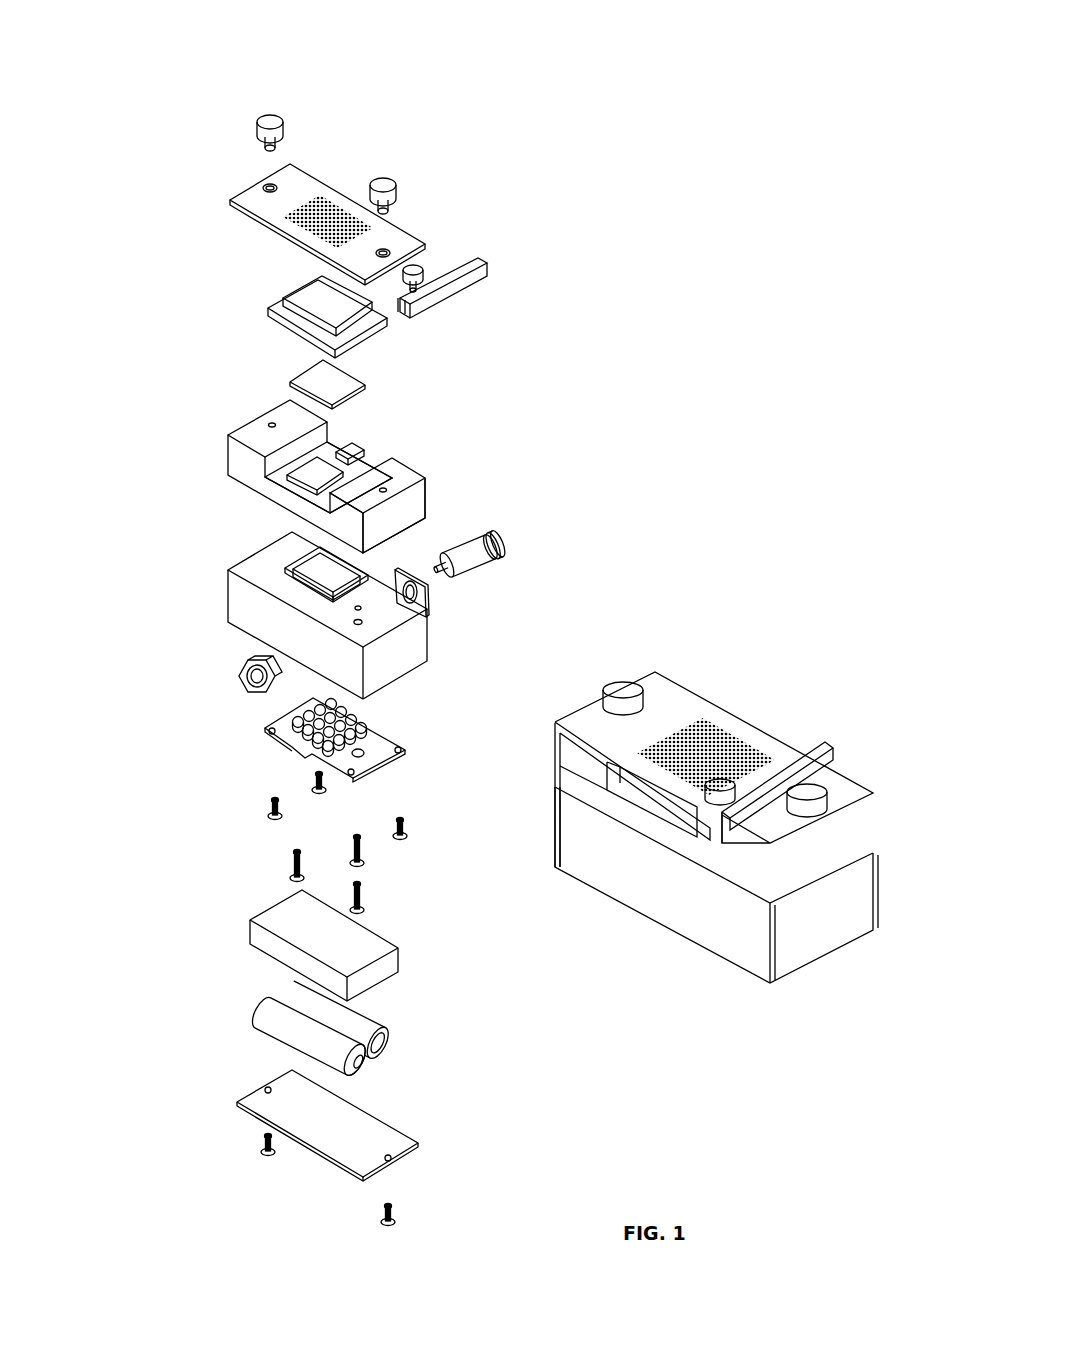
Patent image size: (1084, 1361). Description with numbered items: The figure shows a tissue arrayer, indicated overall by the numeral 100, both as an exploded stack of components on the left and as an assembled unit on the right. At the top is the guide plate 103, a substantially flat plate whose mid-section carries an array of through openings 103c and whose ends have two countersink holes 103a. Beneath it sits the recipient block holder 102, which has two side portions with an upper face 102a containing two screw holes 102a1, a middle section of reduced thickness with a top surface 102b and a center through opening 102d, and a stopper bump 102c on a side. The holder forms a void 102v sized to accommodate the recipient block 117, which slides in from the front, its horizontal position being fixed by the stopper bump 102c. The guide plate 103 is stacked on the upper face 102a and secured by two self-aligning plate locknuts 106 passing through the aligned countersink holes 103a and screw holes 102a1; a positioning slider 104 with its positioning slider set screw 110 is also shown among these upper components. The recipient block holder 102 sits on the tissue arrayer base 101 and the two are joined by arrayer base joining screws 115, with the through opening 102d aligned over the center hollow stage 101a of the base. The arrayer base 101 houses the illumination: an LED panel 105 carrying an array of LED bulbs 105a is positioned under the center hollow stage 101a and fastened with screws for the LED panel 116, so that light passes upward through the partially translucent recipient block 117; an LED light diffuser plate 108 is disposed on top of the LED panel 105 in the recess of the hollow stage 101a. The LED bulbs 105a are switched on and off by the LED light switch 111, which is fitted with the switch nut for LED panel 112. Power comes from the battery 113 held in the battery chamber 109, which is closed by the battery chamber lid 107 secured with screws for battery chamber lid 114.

The electronic device 100 is at (465, 105).
The tissue arrayer base 101 is at (226, 595).
The center hollow stage 101a is at (305, 590).
The recipient block holder 102 is at (226, 452).
The upper face 102a is at (418, 470).
The screw holes 102a1 is at (384, 492).
The top surface 102b is at (290, 484).
The stopper bump 102c is at (365, 453).
The center through opening 102d is at (322, 472).
The void 102v is at (660, 800).
The guide plate 103 is at (232, 200).
The countersink holes 103a is at (388, 253).
The array of through openings 103c is at (330, 212).
The positioning slider 104 is at (490, 270).
The LED panel 105 is at (262, 729).
The LED bulbs 105a is at (358, 730).
The self-aligning plate locknut 106 is at (260, 122).
The battery chamber lid 107 is at (235, 1103).
The LED light diffuser plate 108 is at (288, 380).
The battery chamber 109 is at (248, 948).
The positioning slider set screw 110 is at (432, 262).
The LED light switch 111 is at (503, 557).
The switch nut for LED panel 112 is at (243, 672).
The battery 113 is at (300, 1051).
The screws for battery chamber lid 114 is at (264, 1153).
The arrayer base joining screws 115 is at (286, 873).
The screws for the LED panel 116 is at (266, 812).
The recipient block 117 is at (266, 310).